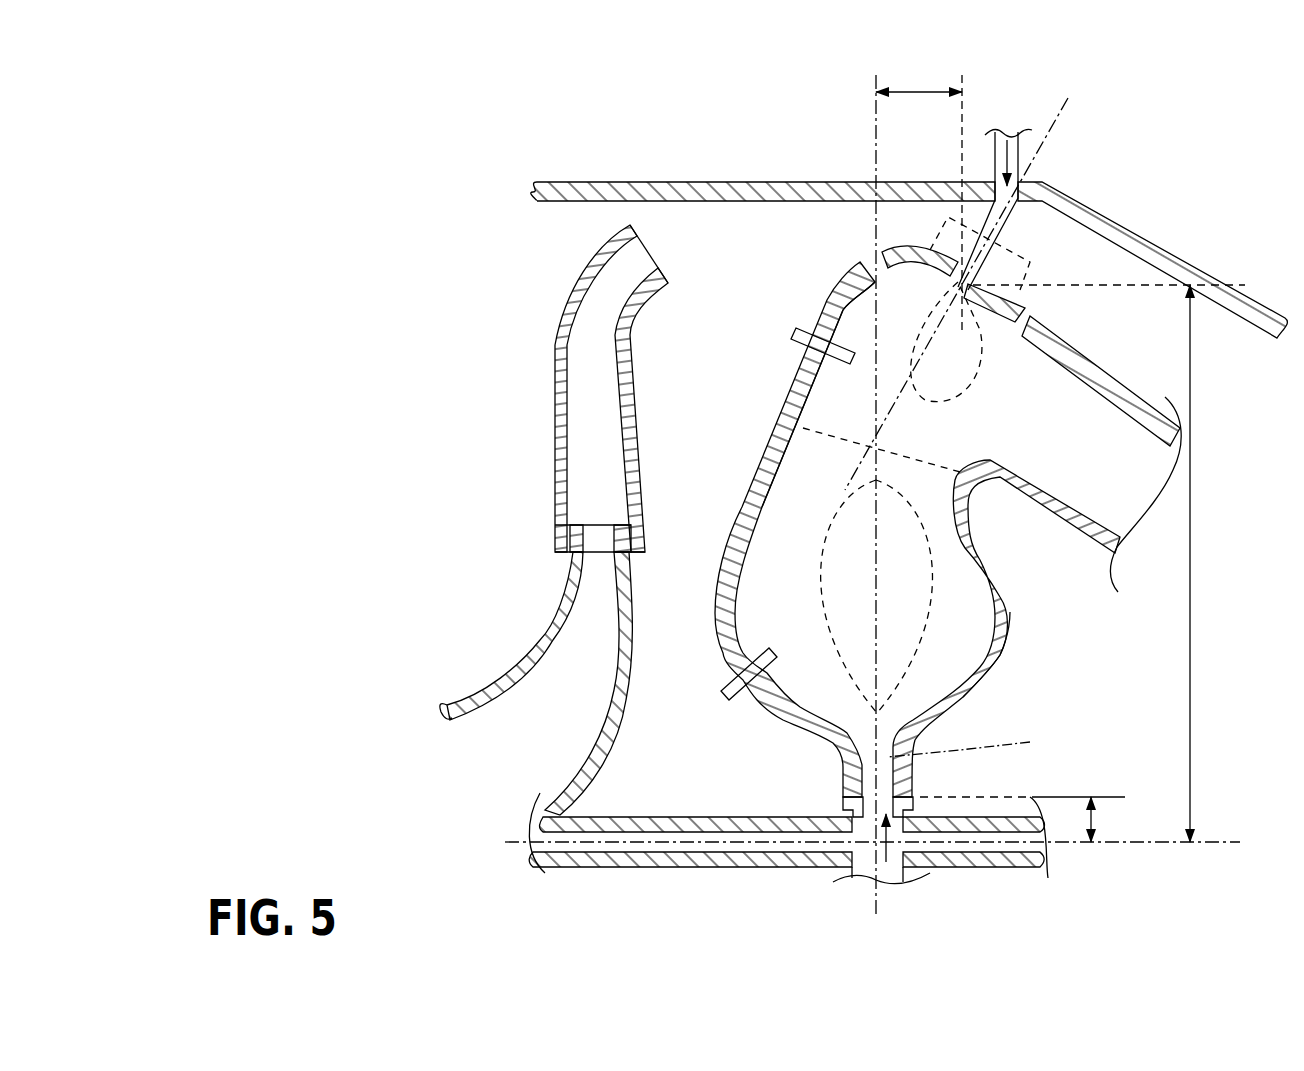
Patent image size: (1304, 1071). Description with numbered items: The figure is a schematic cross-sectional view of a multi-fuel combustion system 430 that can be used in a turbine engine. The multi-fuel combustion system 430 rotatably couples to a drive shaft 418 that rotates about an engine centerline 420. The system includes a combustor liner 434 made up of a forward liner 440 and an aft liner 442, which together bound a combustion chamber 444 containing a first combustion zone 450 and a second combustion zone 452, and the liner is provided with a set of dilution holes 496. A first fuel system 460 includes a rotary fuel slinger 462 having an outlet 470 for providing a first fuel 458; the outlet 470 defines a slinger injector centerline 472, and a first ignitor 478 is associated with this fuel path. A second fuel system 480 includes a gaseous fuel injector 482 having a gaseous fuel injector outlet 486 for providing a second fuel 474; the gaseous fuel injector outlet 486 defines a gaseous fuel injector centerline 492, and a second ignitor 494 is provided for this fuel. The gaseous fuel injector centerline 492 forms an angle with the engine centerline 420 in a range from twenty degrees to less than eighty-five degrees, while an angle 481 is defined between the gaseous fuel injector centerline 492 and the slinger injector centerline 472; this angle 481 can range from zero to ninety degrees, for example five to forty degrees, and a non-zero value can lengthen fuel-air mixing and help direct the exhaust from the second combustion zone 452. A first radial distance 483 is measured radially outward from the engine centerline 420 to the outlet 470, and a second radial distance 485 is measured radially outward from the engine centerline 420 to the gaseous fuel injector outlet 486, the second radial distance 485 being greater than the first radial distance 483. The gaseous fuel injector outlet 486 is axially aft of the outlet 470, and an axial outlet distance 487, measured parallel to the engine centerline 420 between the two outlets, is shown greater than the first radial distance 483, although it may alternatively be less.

The drive shaft 418 is at (607, 873).
The engine centerline 420 is at (1155, 845).
The multi-fuel combustion system 430 is at (688, 635).
The combustor liner 434 is at (1014, 623).
The forward liner 440 is at (743, 495).
The aft liner 442 is at (985, 663).
The combustion chamber 444 is at (857, 450).
The first combustion zone 450 is at (942, 494).
The second combustion zone 452 is at (955, 432).
The first fuel 458 is at (893, 843).
The first fuel system 460 is at (833, 802).
The rotary fuel slinger 462 is at (918, 806).
The outlet 470 is at (866, 820).
The slinger injector centerline 472 is at (981, 744).
The second fuel 474 is at (1012, 157).
The first ignitor 478 is at (732, 697).
The second fuel system 480 is at (1030, 212).
The angle 481 is at (893, 378).
The gaseous fuel injector 482 is at (1008, 222).
The first radial distance 483 is at (1095, 818).
The second radial distance 485 is at (1192, 622).
The gaseous fuel injector outlet 486 is at (970, 345).
The axial outlet distance 487 is at (923, 88).
The gaseous fuel injector centerline 492 is at (1060, 108).
The second ignitor 494 is at (800, 345).
The set of dilution holes 496 is at (878, 258).